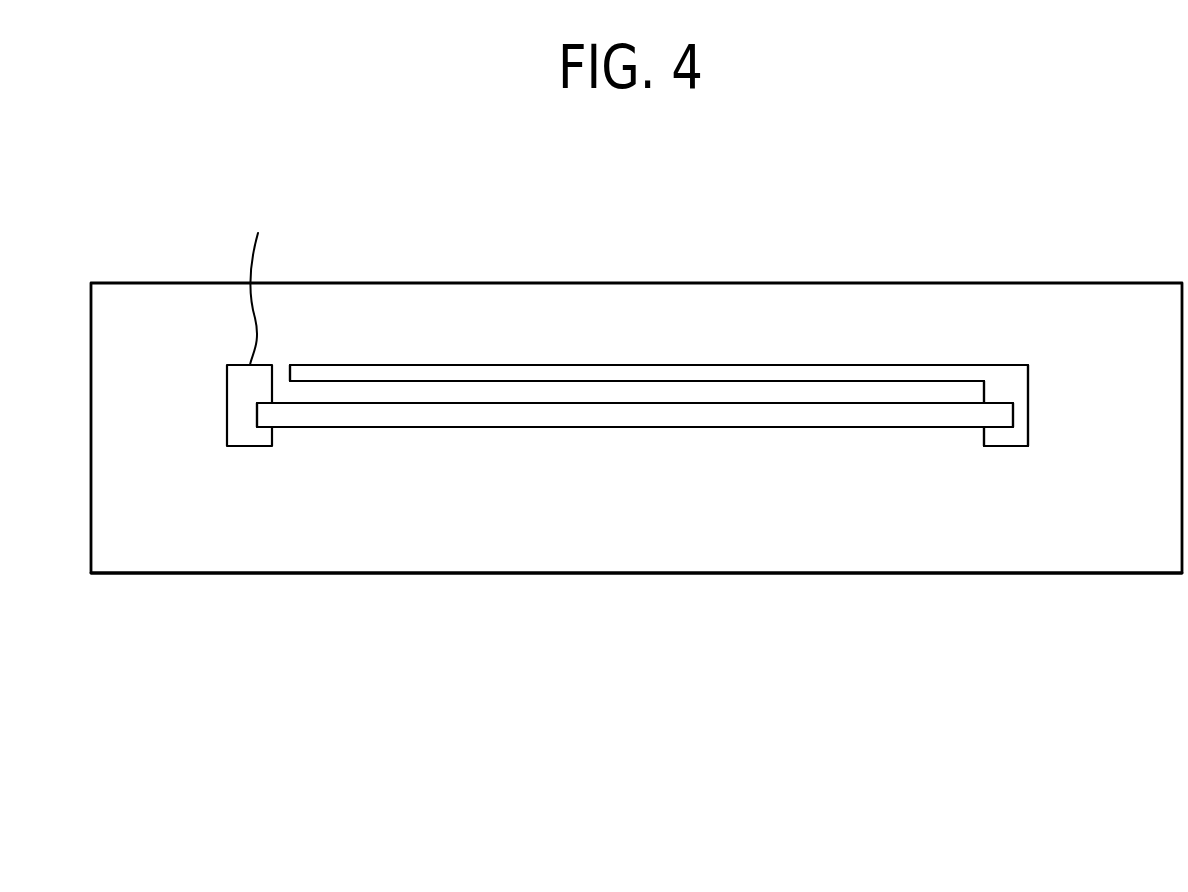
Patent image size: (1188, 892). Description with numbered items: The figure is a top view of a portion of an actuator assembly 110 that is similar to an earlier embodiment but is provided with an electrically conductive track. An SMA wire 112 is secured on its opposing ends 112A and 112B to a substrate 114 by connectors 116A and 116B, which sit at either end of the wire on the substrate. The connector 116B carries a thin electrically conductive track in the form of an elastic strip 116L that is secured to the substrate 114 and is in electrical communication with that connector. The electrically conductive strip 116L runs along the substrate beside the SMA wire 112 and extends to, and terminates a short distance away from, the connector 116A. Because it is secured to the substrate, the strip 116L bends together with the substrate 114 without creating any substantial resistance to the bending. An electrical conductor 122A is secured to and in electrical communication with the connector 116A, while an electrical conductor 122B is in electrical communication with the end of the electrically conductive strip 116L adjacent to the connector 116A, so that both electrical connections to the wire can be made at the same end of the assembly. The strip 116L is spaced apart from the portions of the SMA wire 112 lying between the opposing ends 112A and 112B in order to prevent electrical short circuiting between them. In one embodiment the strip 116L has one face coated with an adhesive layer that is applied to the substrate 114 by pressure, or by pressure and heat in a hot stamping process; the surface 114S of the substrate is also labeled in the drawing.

The actuator assembly 110 is at (947, 202).
The substrate 114 is at (1027, 284).
The substrate surface 114S is at (1087, 535).
The connector 116A is at (249, 447).
The connector 116B is at (995, 447).
The electrically conductive strip 116L is at (670, 365).
The electrical conductor 122A is at (250, 254).
The electrical conductor 122B is at (310, 365).
The SMA wire 112 is at (508, 415).
The opposing end of SMA wire 112A is at (268, 414).
The opposing end of SMA wire 112B is at (987, 415).